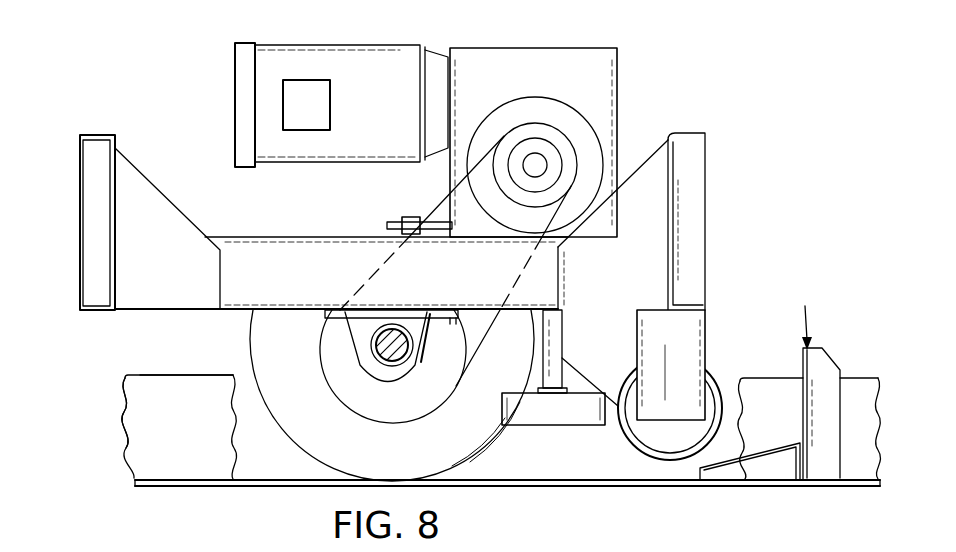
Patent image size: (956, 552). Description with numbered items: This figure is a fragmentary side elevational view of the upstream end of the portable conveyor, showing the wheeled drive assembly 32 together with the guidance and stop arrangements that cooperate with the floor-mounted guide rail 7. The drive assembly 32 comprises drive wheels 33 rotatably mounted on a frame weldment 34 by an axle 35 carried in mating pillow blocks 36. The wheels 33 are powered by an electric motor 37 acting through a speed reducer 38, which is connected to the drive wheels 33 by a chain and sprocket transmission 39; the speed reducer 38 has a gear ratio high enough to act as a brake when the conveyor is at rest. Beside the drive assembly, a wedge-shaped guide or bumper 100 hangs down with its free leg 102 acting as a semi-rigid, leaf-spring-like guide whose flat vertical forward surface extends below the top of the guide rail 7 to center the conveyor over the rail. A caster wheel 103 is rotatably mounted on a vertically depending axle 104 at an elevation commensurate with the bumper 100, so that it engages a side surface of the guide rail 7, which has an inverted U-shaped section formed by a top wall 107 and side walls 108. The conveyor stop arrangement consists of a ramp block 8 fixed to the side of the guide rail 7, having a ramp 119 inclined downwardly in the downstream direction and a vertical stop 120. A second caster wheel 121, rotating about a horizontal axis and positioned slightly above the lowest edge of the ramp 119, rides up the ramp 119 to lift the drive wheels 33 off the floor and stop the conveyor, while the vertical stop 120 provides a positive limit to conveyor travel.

The guide rail 7 is at (133, 400).
The ramp block 8 is at (805, 315).
The wheeled drive assembly 32 is at (210, 324).
The drive wheel 33 is at (470, 445).
The frame weldment 34 is at (272, 247).
The axle 35 is at (403, 333).
The pillow block 36 is at (378, 368).
The electric motor 37 is at (377, 60).
The speed reducer 38 is at (563, 52).
The chain and sprocket transmission 39 is at (450, 205).
The wedge-shaped guide 100 is at (692, 330).
The free leg 102 is at (655, 323).
The caster wheel 103 is at (585, 425).
The axle 104 is at (551, 350).
The top wall 107 is at (195, 388).
The side wall 108 is at (143, 448).
The ramp 119 is at (727, 482).
The vertical stop 120 is at (822, 368).
The caster wheel 121 is at (718, 380).